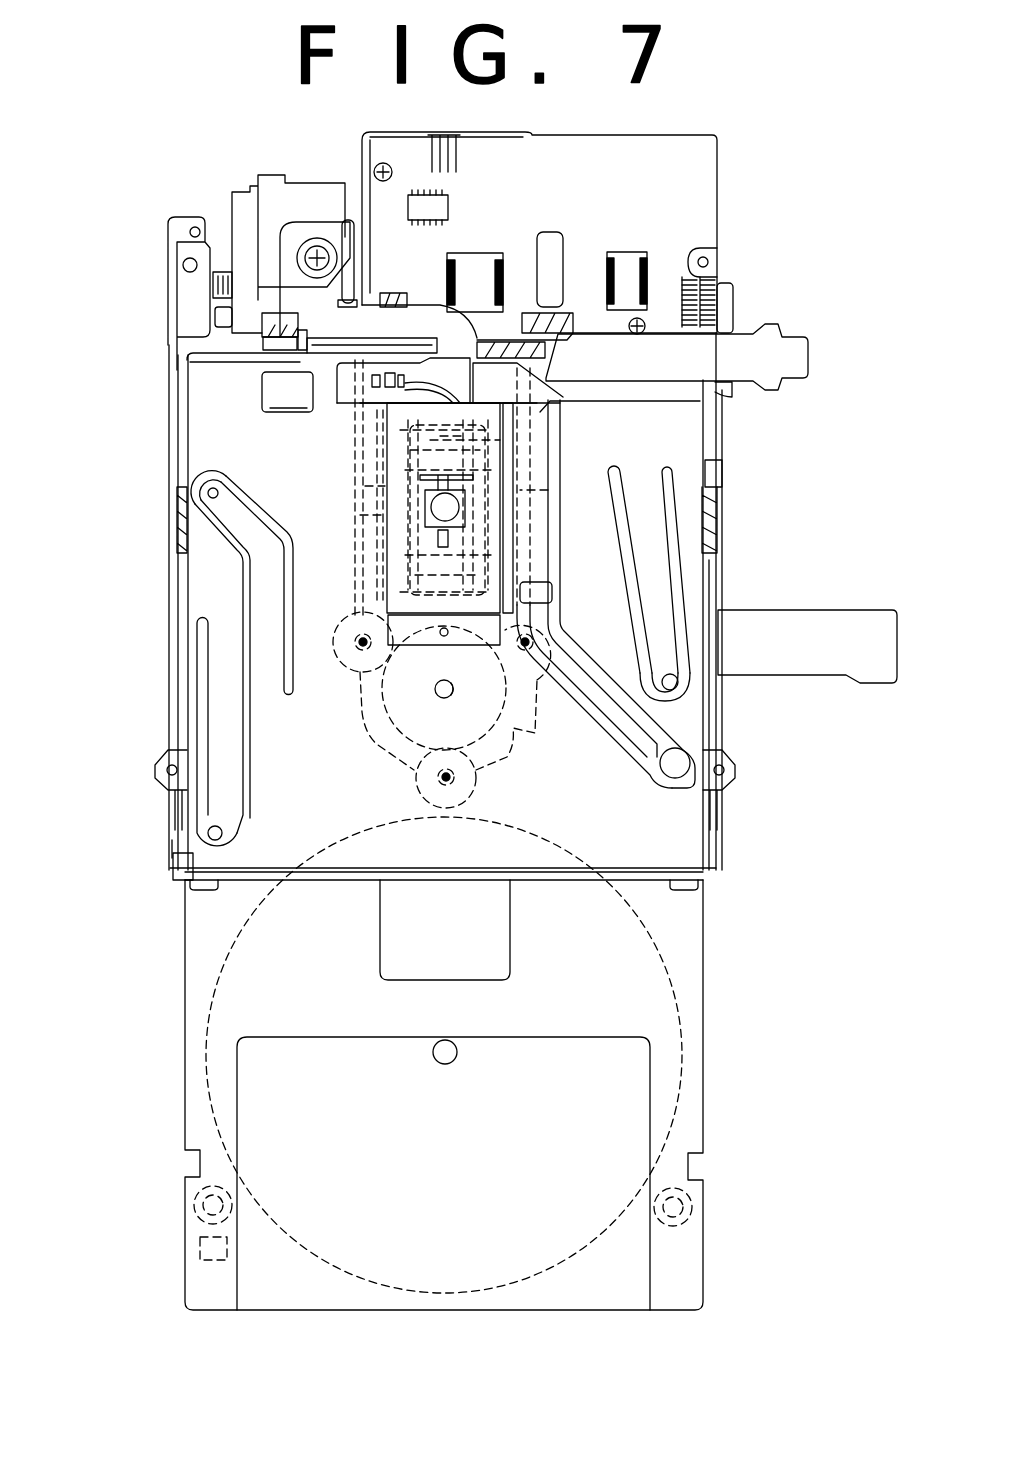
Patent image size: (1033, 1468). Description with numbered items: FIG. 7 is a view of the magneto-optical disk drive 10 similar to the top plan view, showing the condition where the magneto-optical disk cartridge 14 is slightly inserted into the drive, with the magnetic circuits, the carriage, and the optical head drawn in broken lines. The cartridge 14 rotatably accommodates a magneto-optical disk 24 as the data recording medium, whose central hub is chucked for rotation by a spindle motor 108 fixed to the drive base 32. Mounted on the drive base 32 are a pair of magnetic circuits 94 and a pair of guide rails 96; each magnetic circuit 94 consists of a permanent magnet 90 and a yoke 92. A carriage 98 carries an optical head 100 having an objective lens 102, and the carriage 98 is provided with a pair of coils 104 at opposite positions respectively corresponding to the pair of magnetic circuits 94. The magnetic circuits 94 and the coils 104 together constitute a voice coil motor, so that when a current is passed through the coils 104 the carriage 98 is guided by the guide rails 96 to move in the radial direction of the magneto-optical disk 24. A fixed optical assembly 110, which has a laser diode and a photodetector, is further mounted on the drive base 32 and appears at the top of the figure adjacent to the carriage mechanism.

The magneto-optical disk drive 10 is at (722, 449).
The magneto-optical disk cartridge 14 is at (706, 970).
The magneto-optical disk 24 is at (690, 1055).
The drive base 32 is at (190, 313).
The permanent magnet 90 is at (360, 455).
The yoke 92 is at (393, 435).
The magnetic circuit 94 is at (107, 385).
The guide rail 96 is at (375, 653).
The carriage 98 is at (458, 440).
The optical head 100 is at (428, 517).
The objective lens 102 is at (360, 515).
The coil 104 is at (588, 468).
The spindle motor 108 is at (483, 723).
The fixed optical assembly 110 is at (703, 200).